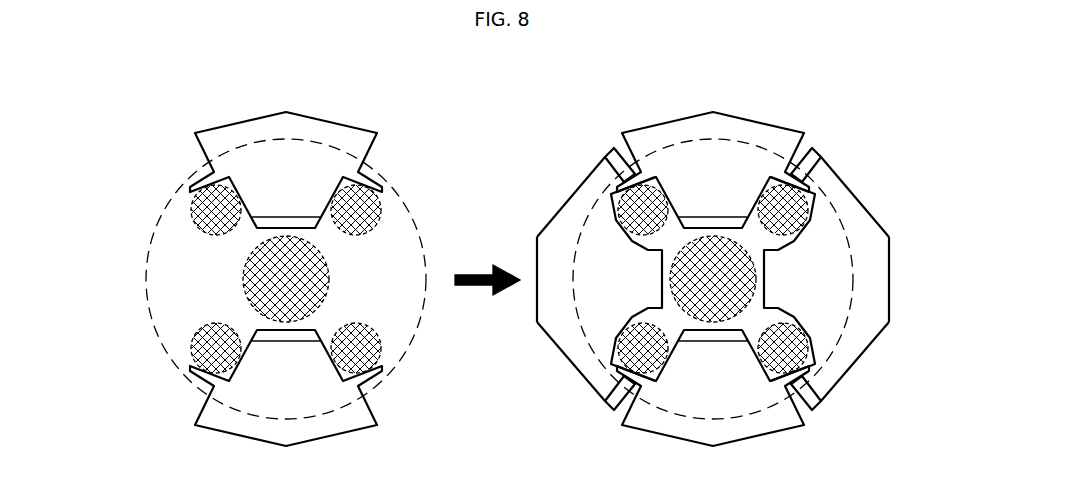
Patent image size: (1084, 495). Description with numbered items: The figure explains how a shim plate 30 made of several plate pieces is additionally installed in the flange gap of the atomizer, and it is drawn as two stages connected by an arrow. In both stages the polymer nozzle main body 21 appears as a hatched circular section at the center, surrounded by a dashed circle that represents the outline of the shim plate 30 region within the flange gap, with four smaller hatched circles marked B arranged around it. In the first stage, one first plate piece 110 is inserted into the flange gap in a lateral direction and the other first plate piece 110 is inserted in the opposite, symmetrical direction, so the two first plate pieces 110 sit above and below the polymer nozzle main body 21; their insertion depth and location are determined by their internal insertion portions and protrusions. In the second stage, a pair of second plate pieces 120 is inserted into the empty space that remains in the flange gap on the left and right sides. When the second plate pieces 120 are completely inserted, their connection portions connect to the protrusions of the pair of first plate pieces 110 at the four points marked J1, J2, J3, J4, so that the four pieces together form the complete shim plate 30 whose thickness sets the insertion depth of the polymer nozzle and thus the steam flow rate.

The first plate piece 110 is at (246, 127).
The second plate piece 120 is at (558, 212).
The polymer nozzle main body 21 is at (247, 278).
The shim plate 30 is at (412, 251).
The bobbin / coil B is at (191, 206).
The connection mark J1 is at (807, 179).
The connection mark J2 is at (619, 179).
The connection mark J3 is at (619, 379).
The connection mark J4 is at (807, 379).